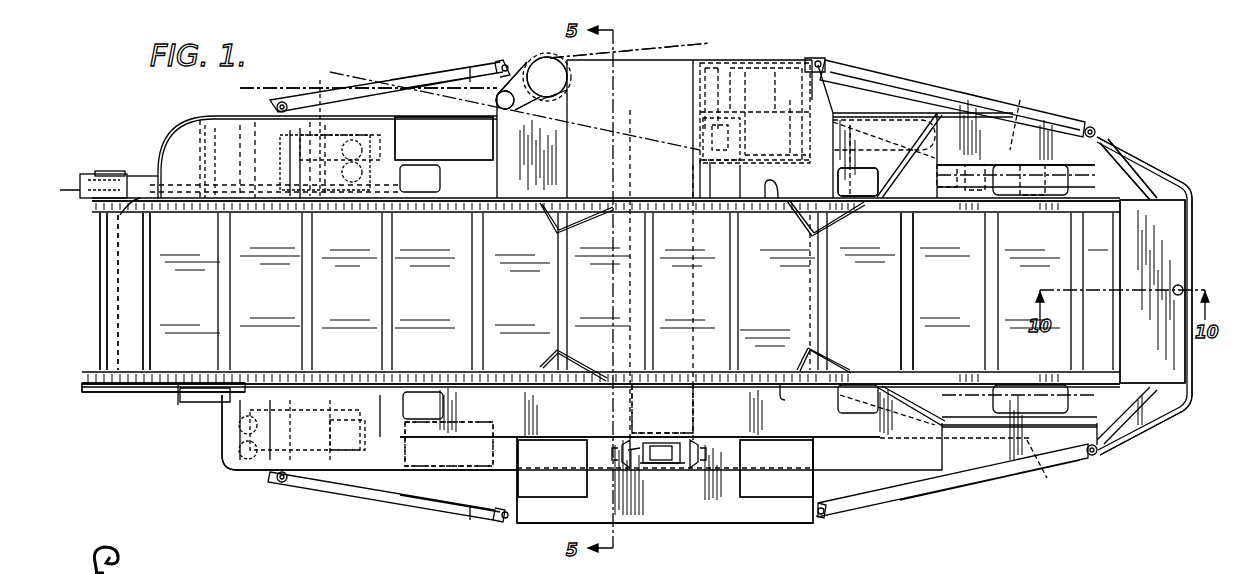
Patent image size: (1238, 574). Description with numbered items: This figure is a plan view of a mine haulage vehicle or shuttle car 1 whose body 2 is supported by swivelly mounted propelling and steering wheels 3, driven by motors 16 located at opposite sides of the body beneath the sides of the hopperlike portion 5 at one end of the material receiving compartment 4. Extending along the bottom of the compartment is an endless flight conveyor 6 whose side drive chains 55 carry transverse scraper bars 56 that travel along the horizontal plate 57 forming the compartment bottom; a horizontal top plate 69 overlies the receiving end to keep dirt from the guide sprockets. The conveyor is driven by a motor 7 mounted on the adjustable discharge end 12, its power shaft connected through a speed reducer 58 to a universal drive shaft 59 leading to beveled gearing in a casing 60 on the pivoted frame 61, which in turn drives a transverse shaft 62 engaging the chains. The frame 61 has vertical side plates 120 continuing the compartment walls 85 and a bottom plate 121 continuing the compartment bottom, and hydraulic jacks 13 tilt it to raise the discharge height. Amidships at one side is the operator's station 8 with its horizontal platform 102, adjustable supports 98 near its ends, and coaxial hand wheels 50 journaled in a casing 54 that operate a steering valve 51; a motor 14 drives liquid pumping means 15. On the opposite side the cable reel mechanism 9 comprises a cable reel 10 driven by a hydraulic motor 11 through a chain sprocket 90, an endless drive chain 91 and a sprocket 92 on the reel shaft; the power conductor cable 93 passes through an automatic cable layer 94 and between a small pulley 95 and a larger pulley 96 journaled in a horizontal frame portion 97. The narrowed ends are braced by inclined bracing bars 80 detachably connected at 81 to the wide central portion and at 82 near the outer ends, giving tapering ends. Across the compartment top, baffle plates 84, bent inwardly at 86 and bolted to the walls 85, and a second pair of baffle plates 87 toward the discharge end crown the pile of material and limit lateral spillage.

The shuttle car 1 is at (735, 58).
The body 2 is at (520, 427).
The propelling and steering wheels 3 is at (860, 117).
The material receiving compartment 4 is at (978, 235).
The hopperlike portion 5 is at (1115, 165).
The endless flight conveyor 6 is at (220, 340).
The motor 7 is at (328, 126).
The operator's station 8 is at (680, 500).
The cable reel mechanism 9 is at (790, 96).
The cable reel 10 is at (762, 78).
The hydraulic motor 11 is at (700, 140).
The adjustable discharge end 12 is at (105, 392).
The hydraulic jacks 13 is at (195, 420).
The motor 14 is at (260, 472).
The liquid pumping means 15 is at (345, 425).
The motors 16 is at (1034, 291).
The hand wheels 50 is at (625, 444).
The valve 51 is at (655, 395).
The casing 54 is at (668, 443).
The side drive chains 55 is at (278, 205).
The scraper bars 56 is at (920, 285).
The horizontal plate 57 is at (1100, 330).
The speed reducer 58 is at (285, 165).
The universal drive shaft 59 is at (160, 175).
The casing 60 is at (92, 180).
The pivoted frame 61 is at (120, 215).
The transverse shaft 62 is at (102, 284).
The horizontal top plate 69 is at (1165, 215).
The bracing bars 80 is at (408, 80).
The detachable connections 81 is at (503, 62).
The detachable connections 82 is at (283, 102).
The baffle plates 84 is at (805, 233).
The compartment walls 85 is at (770, 186).
The inwardly inclined portion 86 is at (835, 222).
The baffle plates 87 is at (548, 228).
The chain sprocket 90 is at (712, 165).
The endless drive chain 91 is at (745, 165).
The sprocket 92 is at (838, 166).
The power conductor cable 93 is at (258, 88).
The automatic cable layer 94 is at (700, 165).
The pulley 95 is at (507, 110).
The pulley 96 is at (543, 58).
The horizontal frame portion 97 is at (520, 68).
The adjustable supports 98 is at (560, 495).
The horizontal platform 102 is at (648, 525).
The vertical side plates 120 is at (145, 195).
The bottom plate 121 is at (180, 310).